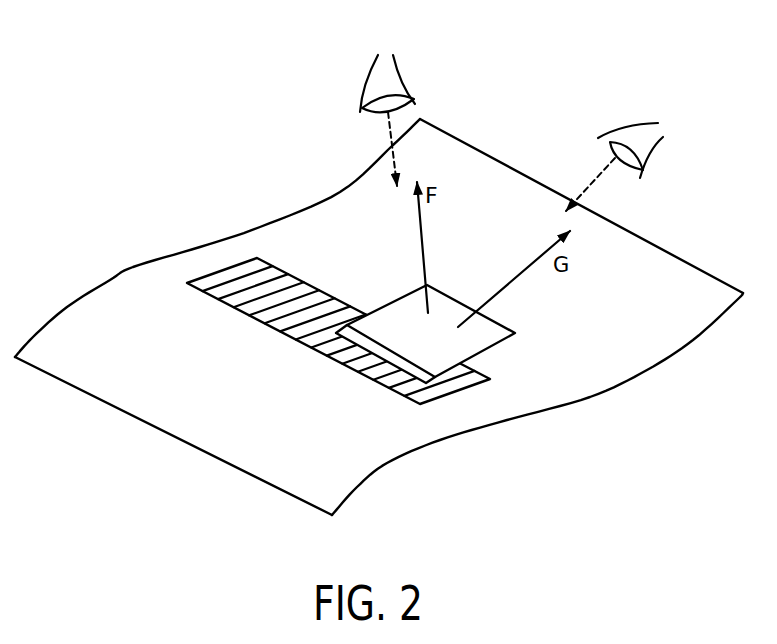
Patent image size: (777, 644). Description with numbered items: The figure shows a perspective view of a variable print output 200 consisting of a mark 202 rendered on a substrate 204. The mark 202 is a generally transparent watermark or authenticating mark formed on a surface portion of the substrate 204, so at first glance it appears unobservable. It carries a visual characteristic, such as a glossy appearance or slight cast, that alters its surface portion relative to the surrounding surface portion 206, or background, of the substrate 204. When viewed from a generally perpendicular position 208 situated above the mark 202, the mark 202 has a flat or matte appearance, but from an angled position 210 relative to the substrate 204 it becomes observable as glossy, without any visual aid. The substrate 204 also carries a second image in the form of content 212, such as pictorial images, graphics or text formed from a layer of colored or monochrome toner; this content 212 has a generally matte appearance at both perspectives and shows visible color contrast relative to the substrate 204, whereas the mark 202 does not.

The variable print output 200 is at (118, 88).
The mark 202 is at (515, 333).
The substrate 204 is at (677, 253).
The surrounding surface portion 206 is at (311, 435).
The perpendicular position 208 is at (400, 78).
The angled position 210 is at (657, 150).
The content 212 is at (213, 302).